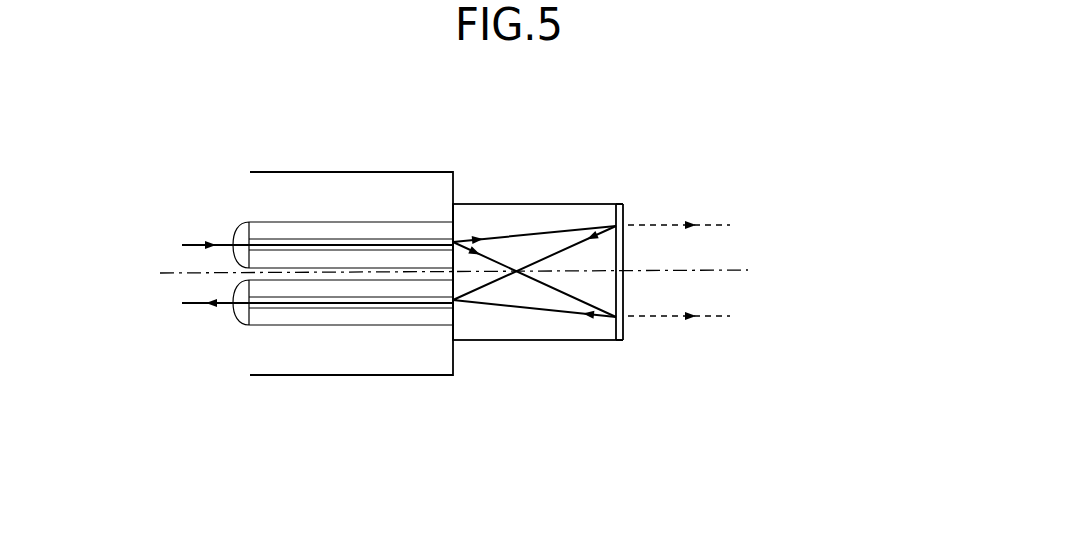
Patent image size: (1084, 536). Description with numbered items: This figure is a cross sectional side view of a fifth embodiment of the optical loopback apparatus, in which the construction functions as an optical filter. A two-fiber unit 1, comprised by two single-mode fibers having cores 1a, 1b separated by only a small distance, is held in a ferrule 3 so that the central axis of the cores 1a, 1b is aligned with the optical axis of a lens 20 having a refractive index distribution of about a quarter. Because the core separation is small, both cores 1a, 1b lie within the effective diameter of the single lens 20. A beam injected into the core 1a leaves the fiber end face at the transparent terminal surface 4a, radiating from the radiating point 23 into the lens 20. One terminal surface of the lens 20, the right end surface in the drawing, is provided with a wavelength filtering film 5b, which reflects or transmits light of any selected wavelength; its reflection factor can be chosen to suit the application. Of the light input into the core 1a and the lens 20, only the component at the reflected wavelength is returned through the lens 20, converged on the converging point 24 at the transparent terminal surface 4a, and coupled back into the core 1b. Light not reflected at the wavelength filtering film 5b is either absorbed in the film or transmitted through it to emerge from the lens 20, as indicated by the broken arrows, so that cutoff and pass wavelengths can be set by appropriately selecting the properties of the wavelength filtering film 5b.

The two-fiber unit 1 is at (286, 334).
The core 1a is at (241, 239).
The core 1b is at (243, 310).
The ferrule 3 is at (265, 378).
The transparent terminal surface 4a is at (457, 207).
The lens 20 is at (565, 342).
The radiating point 23 is at (458, 236).
The converging point 24 is at (458, 302).
The wavelength filtering film 5b is at (625, 333).